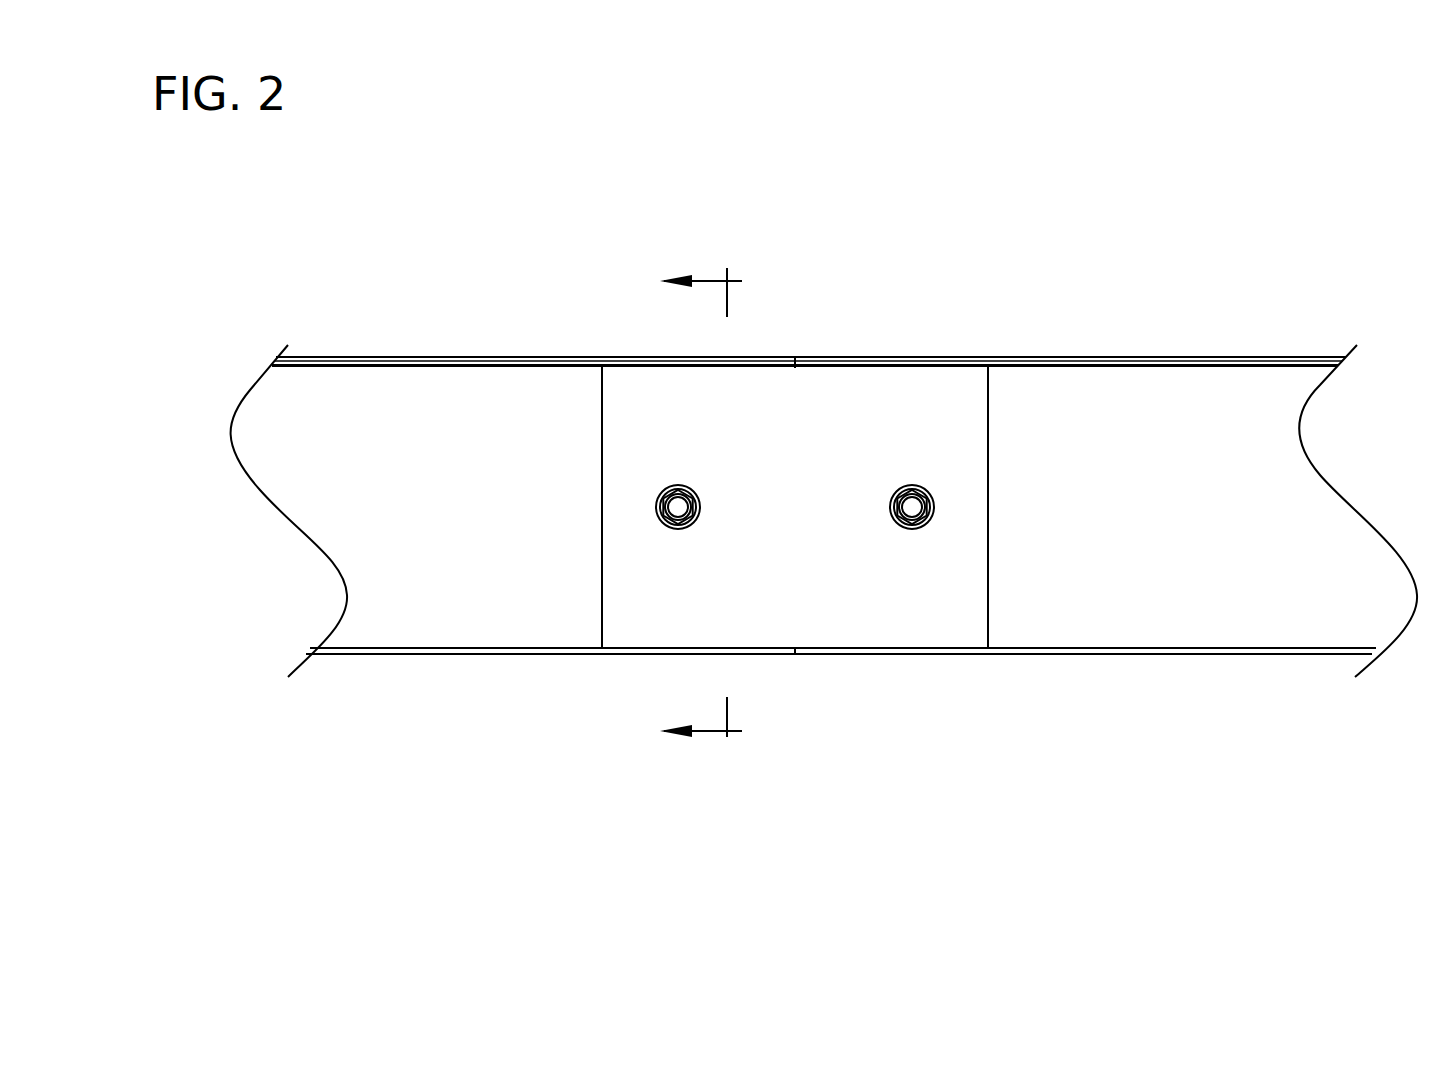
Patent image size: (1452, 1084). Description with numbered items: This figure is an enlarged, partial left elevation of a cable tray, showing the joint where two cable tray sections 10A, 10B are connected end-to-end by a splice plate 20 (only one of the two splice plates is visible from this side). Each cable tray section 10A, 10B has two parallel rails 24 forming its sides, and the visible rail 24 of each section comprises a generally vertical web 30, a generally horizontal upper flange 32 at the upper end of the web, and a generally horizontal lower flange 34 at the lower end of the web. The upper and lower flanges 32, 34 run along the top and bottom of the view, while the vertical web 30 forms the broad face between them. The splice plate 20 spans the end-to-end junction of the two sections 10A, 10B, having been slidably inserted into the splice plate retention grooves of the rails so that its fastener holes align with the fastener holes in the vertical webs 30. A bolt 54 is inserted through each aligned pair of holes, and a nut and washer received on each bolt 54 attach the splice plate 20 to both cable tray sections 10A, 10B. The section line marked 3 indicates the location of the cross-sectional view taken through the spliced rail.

The section line 3- 3 is at (707, 509).
The cable tray section 10A is at (486, 325).
The cable tray section 10B is at (1181, 310).
The splice plate 20 is at (913, 395).
The rail 24 is at (398, 668).
The vertical web 30 is at (322, 472).
The upper flange 32 is at (372, 360).
The lower flange 34 is at (474, 654).
The bolt 54 is at (678, 507).